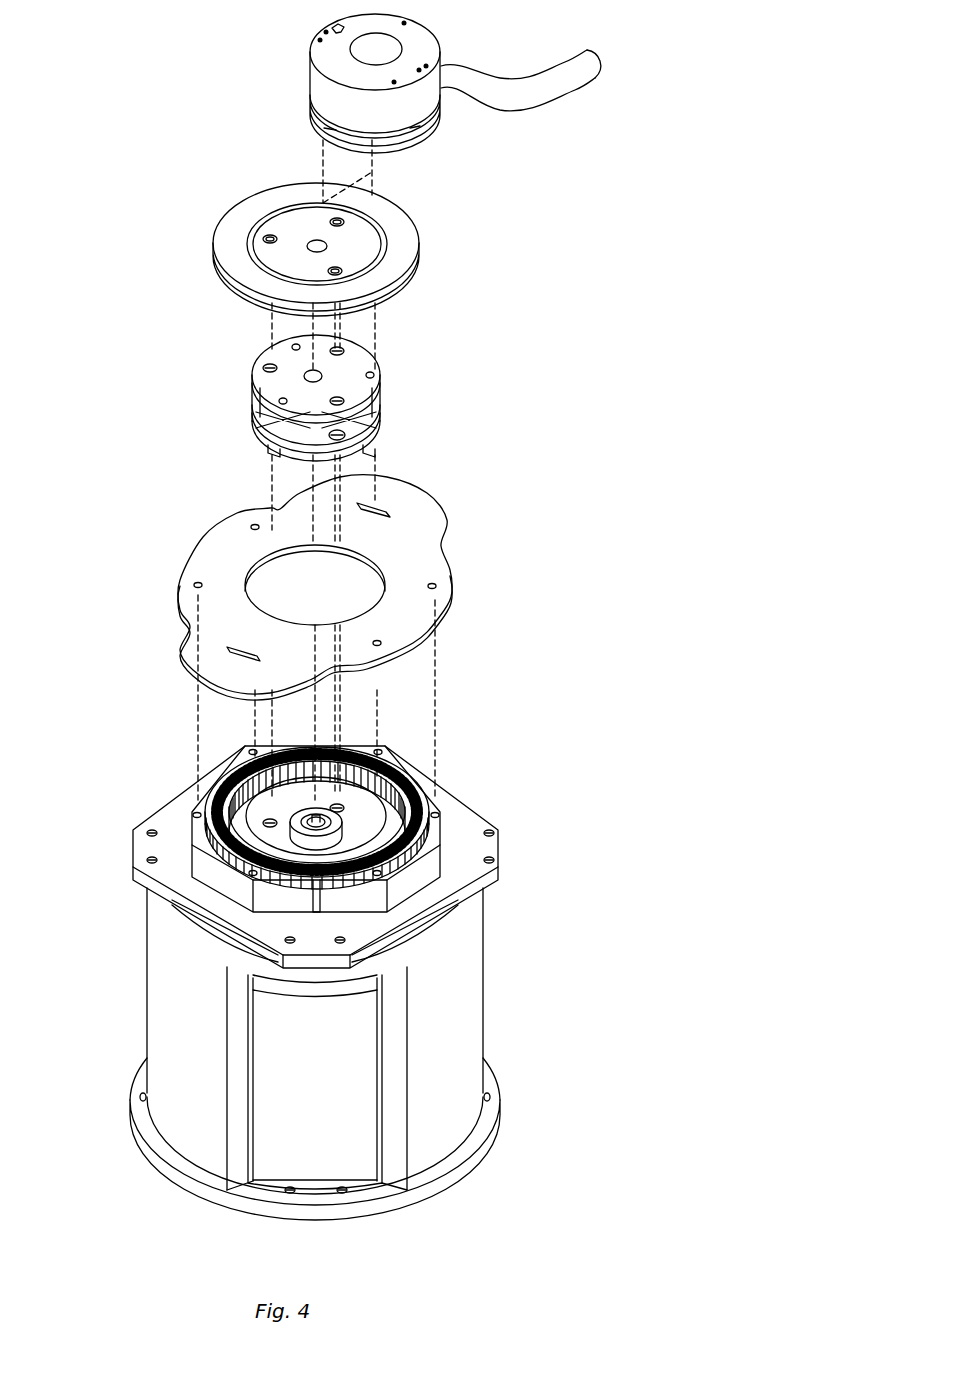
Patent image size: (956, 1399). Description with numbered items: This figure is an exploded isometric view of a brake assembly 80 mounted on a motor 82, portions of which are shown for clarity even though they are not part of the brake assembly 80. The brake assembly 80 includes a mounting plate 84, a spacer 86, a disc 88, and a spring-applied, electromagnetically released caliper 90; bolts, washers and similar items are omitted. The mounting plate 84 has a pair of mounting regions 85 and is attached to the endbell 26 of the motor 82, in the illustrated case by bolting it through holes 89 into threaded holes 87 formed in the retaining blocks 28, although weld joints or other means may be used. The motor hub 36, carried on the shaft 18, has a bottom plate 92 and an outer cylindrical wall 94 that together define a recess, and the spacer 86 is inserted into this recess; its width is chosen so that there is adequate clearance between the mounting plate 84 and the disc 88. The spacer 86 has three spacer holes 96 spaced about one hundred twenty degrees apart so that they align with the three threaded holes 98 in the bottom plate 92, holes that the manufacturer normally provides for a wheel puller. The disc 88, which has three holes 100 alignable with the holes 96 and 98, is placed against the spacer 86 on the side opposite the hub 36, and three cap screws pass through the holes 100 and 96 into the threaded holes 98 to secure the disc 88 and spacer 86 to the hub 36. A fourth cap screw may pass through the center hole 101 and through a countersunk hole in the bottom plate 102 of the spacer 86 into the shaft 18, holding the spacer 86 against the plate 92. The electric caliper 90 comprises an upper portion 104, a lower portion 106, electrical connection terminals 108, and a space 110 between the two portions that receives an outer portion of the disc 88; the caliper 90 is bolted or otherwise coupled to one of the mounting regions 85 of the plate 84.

The caliper 90 is at (376, 67).
The upper portion 104 is at (323, 63).
The lower portion 106 is at (313, 122).
The electrical connection terminals 108 is at (583, 52).
The space 110 is at (427, 125).
The disc 88 is at (339, 249).
The holes 100 is at (270, 237).
The spacer 86 is at (338, 403).
The center hole 101 is at (313, 373).
The spacer holes 96 is at (337, 350).
The bottom plate 102 is at (380, 403).
The brake assembly 80 is at (212, 436).
The mounting plate 84 is at (422, 471).
The mounting regions 85 is at (350, 587).
The holes 89 is at (433, 587).
The endbell 26 is at (315, 957).
The retaining blocks 28 is at (437, 833).
The hub 36 is at (410, 777).
The outer cylindrical wall 94 is at (353, 827).
The bottom plate 92 is at (403, 847).
The shaft 18 is at (267, 783).
The threaded holes 98 is at (337, 806).
The threaded holes 87 is at (230, 813).
The motor 82 is at (132, 950).